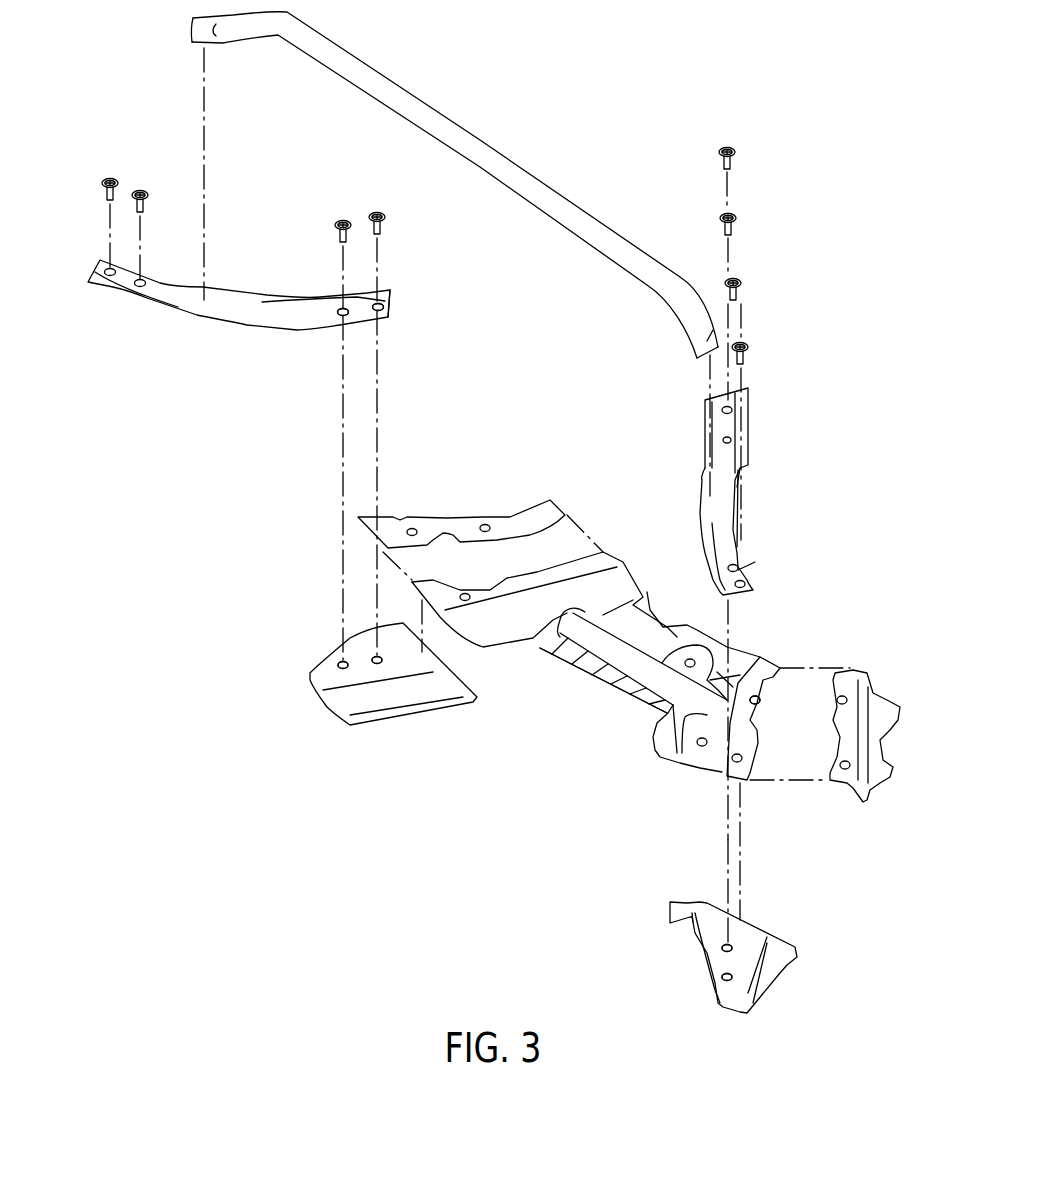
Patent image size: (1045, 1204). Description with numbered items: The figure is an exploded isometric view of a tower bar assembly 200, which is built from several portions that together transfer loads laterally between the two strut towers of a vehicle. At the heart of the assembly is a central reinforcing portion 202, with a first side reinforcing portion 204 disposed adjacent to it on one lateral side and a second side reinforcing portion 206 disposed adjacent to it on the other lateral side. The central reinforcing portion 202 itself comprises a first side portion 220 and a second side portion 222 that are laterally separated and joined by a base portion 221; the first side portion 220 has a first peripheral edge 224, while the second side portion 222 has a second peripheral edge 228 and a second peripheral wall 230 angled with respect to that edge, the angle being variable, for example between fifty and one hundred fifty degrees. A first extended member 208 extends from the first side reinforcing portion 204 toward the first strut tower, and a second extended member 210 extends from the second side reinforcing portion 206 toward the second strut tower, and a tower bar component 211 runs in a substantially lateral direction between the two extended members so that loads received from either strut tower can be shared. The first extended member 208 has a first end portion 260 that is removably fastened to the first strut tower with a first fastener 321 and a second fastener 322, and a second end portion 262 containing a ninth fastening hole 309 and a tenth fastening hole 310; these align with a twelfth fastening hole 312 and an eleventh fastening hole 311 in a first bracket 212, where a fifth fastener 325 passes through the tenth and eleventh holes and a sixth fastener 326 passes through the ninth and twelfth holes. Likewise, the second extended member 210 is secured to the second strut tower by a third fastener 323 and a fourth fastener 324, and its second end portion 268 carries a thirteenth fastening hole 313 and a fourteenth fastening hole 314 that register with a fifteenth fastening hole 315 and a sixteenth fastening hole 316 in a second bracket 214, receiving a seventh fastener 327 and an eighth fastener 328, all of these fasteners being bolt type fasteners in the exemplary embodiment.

The tower bar assembly 200 is at (858, 449).
The central reinforcing portion 202 is at (576, 689).
The first side reinforcing portion 204 is at (888, 681).
The second side reinforcing portion 206 is at (520, 510).
The first extended member 208 is at (723, 508).
The second extended member 210 is at (245, 297).
The tower bar component 211 is at (494, 153).
The first bracket 212 is at (758, 925).
The second bracket 214 is at (388, 712).
The first side portion 220 is at (782, 657).
The base portion 221 is at (617, 700).
The second side portion 222 is at (629, 547).
The first peripheral edge 224 is at (767, 695).
The second peripheral edge 228 is at (545, 583).
The second peripheral wall 230 is at (508, 630).
The first end portion 260 is at (746, 582).
The second end portion 262 is at (750, 421).
The second end portion 268 is at (392, 302).
The ninth fastening hole 309 is at (722, 406).
The tenth fastening hole 310 is at (722, 440).
The eleventh fastening hole 311 is at (721, 978).
The twelfth fastening hole 312 is at (722, 948).
The thirteenth fastening hole 313 is at (341, 315).
The fourteenth fastening hole 314 is at (384, 311).
The fifteenth fastening hole 315 is at (338, 663).
The sixteenth fastening hole 316 is at (372, 664).
The first fastener 321 is at (749, 347).
The second fastener 322 is at (742, 283).
The third fastener 323 is at (144, 191).
The fourth fastener 324 is at (107, 179).
The fifth fastener 325 is at (719, 218).
The sixth fastener 326 is at (736, 152).
The seventh fastener 327 is at (340, 221).
The eighth fastener 328 is at (386, 217).